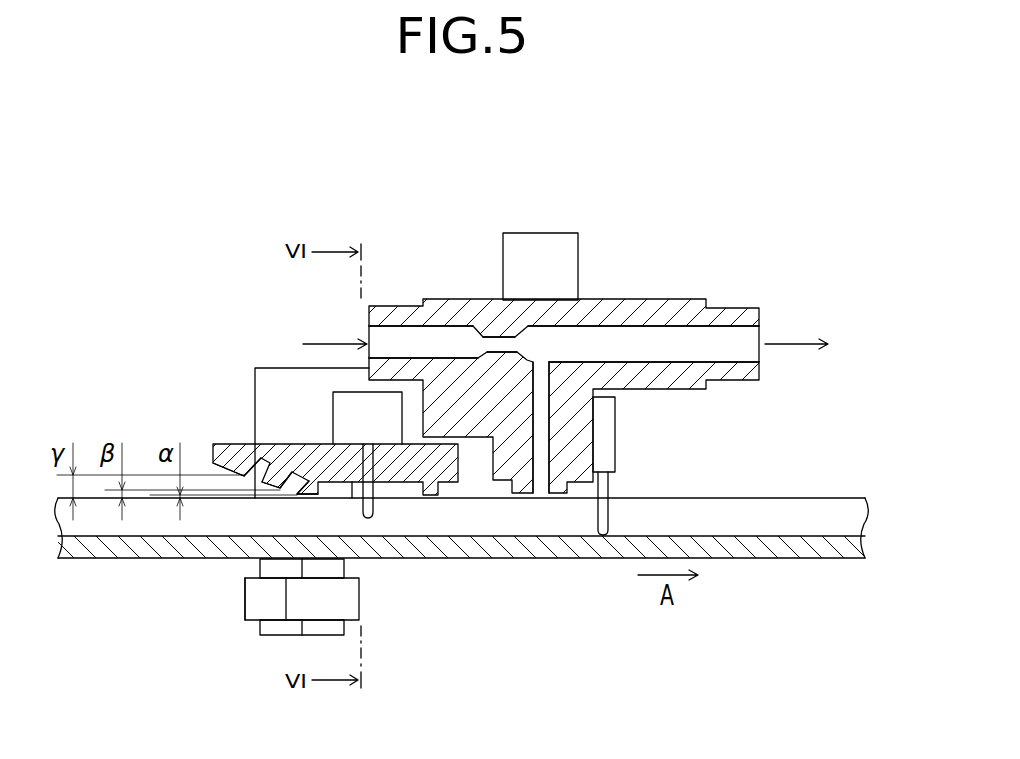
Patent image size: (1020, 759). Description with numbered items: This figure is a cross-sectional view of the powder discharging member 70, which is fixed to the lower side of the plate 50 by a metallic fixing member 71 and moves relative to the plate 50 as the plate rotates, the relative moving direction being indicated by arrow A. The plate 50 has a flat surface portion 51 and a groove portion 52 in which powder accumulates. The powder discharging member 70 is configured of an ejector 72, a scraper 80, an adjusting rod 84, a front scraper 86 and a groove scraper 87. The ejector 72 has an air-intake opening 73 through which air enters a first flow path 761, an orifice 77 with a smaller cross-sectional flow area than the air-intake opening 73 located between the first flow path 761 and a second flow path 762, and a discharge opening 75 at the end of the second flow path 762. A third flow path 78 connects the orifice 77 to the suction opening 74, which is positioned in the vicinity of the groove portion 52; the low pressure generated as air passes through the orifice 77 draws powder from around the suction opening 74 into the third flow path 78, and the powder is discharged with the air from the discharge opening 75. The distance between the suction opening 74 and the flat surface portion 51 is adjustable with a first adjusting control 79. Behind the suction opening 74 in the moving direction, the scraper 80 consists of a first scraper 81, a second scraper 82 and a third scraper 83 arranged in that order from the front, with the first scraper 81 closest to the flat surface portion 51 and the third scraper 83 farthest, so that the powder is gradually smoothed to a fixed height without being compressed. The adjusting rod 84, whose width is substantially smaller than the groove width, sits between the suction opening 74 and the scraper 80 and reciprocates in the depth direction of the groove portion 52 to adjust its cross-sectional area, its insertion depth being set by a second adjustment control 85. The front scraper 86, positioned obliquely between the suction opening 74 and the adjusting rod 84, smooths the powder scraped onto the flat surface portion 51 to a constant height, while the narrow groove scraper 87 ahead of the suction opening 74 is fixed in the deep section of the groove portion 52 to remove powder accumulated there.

The powder discharging member 70 is at (229, 122).
The fixing member 71 is at (545, 247).
The ejector 72 is at (622, 315).
The air-intake opening 73 is at (367, 336).
The suction opening 74 is at (543, 493).
The discharge opening 75 is at (760, 332).
The first flow path 761 is at (417, 340).
The second flow path 762 is at (698, 343).
The orifice 77 is at (500, 343).
The third flow path 78 is at (535, 415).
The first adjusting control 79 is at (359, 602).
The scraper 80 is at (233, 604).
The first scraper 81 is at (297, 494).
The second scraper 82 is at (280, 488).
The third scraper 83 is at (244, 476).
The adjusting rod 84 is at (373, 508).
The second adjustment control 85 is at (243, 608).
The front scraper 86 is at (433, 502).
The groove scraper 87 is at (608, 520).
The plate 50 is at (773, 553).
The flat surface portion 51 is at (800, 498).
The groove portion 52 is at (702, 535).